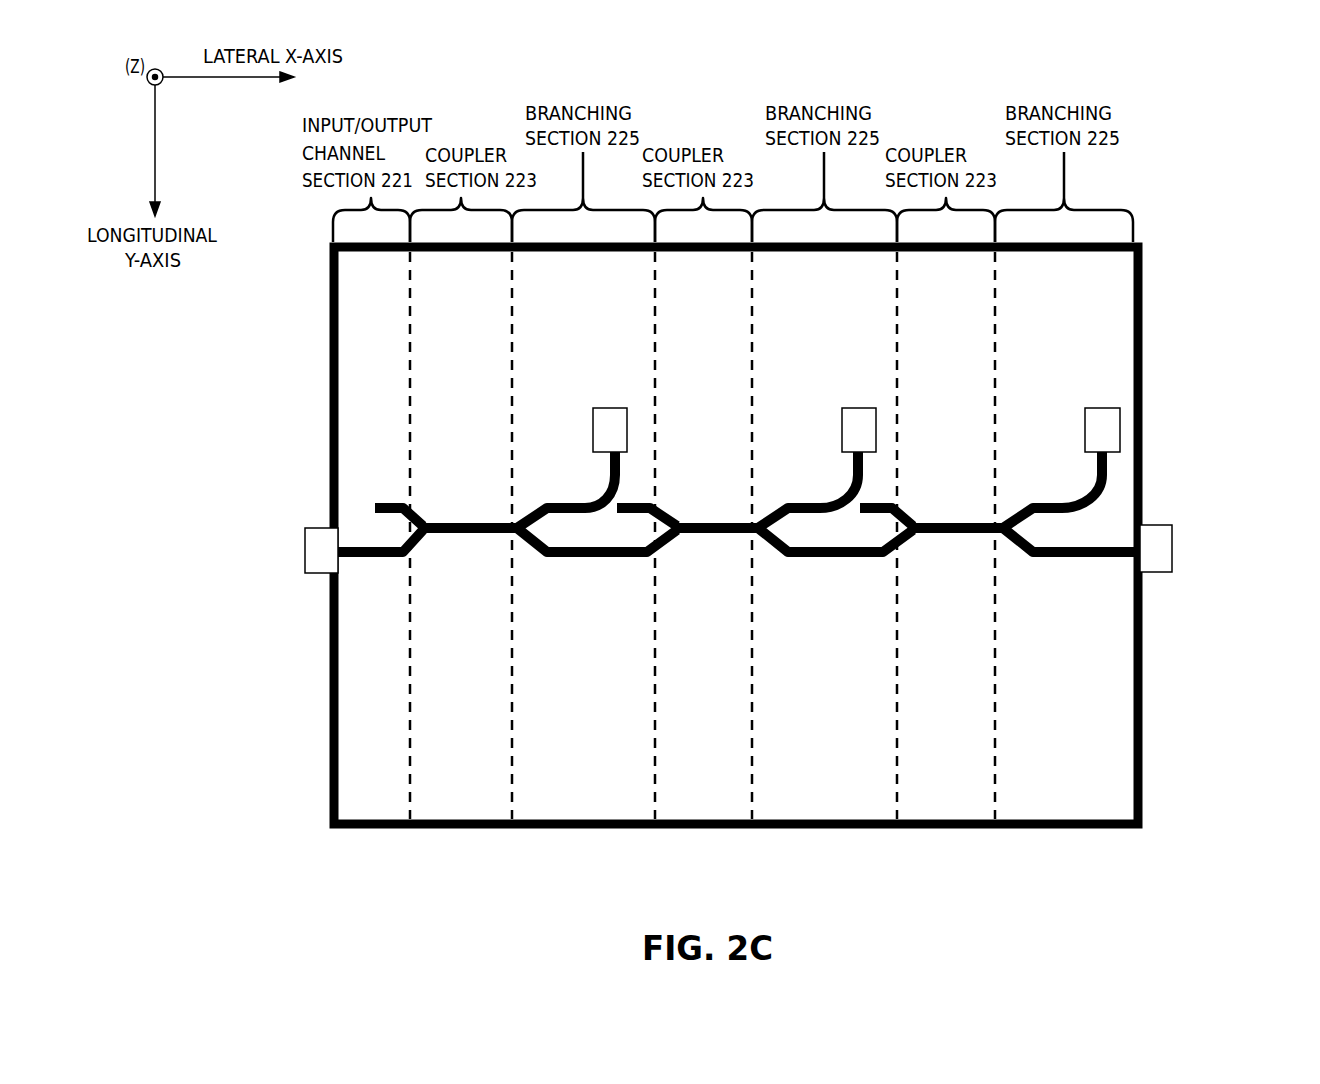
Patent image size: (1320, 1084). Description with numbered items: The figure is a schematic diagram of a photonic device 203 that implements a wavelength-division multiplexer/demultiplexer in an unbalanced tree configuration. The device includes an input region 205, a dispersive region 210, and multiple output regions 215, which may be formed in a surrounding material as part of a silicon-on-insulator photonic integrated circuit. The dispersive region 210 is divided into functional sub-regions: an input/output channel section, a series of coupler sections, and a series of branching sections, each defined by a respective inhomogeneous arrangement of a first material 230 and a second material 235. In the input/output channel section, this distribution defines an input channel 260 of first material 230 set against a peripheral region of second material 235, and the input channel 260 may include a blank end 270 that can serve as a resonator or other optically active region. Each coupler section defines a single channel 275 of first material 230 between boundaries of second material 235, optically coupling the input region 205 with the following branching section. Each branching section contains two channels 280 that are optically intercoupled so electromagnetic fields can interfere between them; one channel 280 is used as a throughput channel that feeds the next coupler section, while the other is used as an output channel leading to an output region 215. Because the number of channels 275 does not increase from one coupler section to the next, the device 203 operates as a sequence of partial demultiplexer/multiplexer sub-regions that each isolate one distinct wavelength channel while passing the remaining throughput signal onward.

The photonic integrated circuit layout 203 is at (1265, 92).
The input region 205 is at (318, 546).
The dispersive region 210 is at (1143, 289).
The output region 215 is at (593, 425).
The first material 230 is at (935, 524).
The second material 235 is at (708, 771).
The input channel 260 is at (362, 558).
The blank end 270 is at (364, 503).
The channel 275 is at (460, 540).
The channel 280 is at (578, 502).